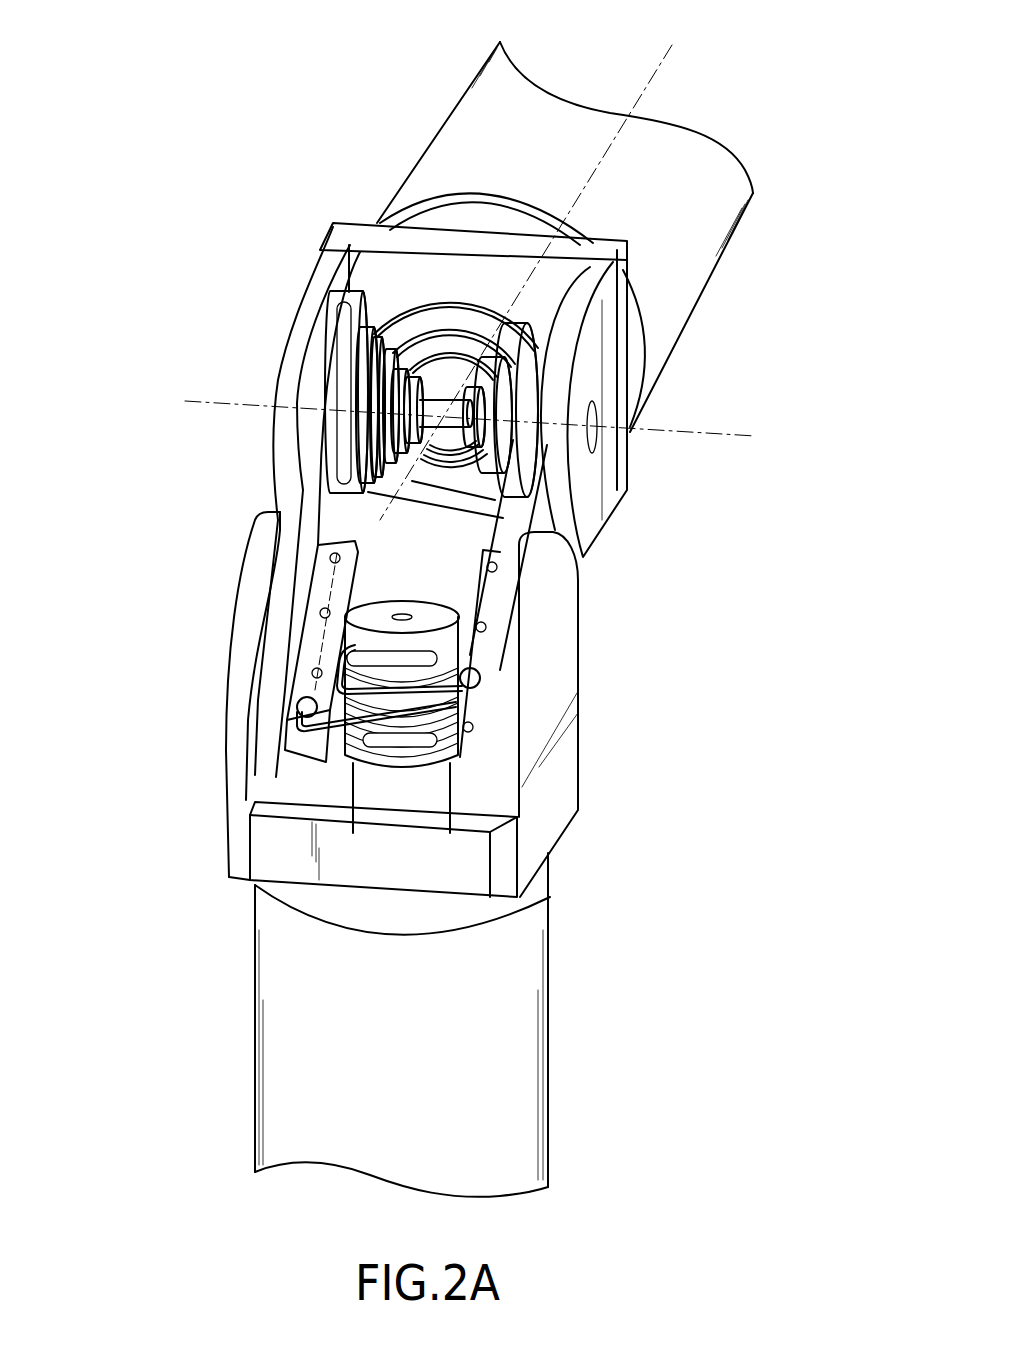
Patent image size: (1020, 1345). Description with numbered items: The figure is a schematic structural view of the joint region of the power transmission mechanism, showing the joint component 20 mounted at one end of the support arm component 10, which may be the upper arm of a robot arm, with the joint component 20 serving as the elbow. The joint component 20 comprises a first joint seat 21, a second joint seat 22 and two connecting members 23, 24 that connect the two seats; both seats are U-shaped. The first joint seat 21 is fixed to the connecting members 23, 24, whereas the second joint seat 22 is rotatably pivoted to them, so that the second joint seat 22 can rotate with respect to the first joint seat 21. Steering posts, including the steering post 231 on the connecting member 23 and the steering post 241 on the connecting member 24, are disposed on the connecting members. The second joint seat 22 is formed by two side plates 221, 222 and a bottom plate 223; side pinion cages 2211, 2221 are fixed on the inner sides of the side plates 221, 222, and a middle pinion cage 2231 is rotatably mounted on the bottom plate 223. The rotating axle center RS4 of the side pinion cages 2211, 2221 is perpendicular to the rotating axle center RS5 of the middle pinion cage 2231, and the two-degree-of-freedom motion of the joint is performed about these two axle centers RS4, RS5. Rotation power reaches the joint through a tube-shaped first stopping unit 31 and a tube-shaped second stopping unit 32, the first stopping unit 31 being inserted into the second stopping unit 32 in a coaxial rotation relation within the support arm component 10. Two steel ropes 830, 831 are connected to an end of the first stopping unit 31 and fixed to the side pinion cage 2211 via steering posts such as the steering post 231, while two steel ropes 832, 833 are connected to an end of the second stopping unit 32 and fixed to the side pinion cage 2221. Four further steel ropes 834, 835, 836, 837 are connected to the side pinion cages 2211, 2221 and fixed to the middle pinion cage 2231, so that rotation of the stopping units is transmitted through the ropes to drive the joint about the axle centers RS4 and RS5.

The support arm component 10 is at (238, 1033).
The joint component 20 is at (712, 612).
The first joint seat 21 is at (563, 733).
The second joint seat 22 is at (660, 408).
The connecting member 23 is at (293, 487).
The connecting member 24 is at (523, 513).
The first stopping unit 31 is at (433, 797).
The second stopping unit 32 is at (445, 612).
The side plate 221 is at (326, 258).
The side plate 222 is at (593, 473).
The bottom plate 223 is at (393, 273).
The steering post 231 is at (303, 703).
The steering post 241 is at (478, 678).
The steel rope 830 is at (355, 748).
The steel rope 831 is at (407, 742).
The steel rope 832 is at (345, 578).
The steel rope 833 is at (317, 693).
The steel rope 834 is at (370, 383).
The steel rope 835 is at (390, 425).
The steel rope 836 is at (505, 365).
The steel rope 837 is at (475, 455).
The side pinion cage 2211 is at (353, 333).
The side pinion cage 2221 is at (528, 330).
The middle pinion cage 2231 is at (447, 302).
The rotating axle center RS4 is at (492, 425).
The rotating axle center RS5 is at (539, 269).